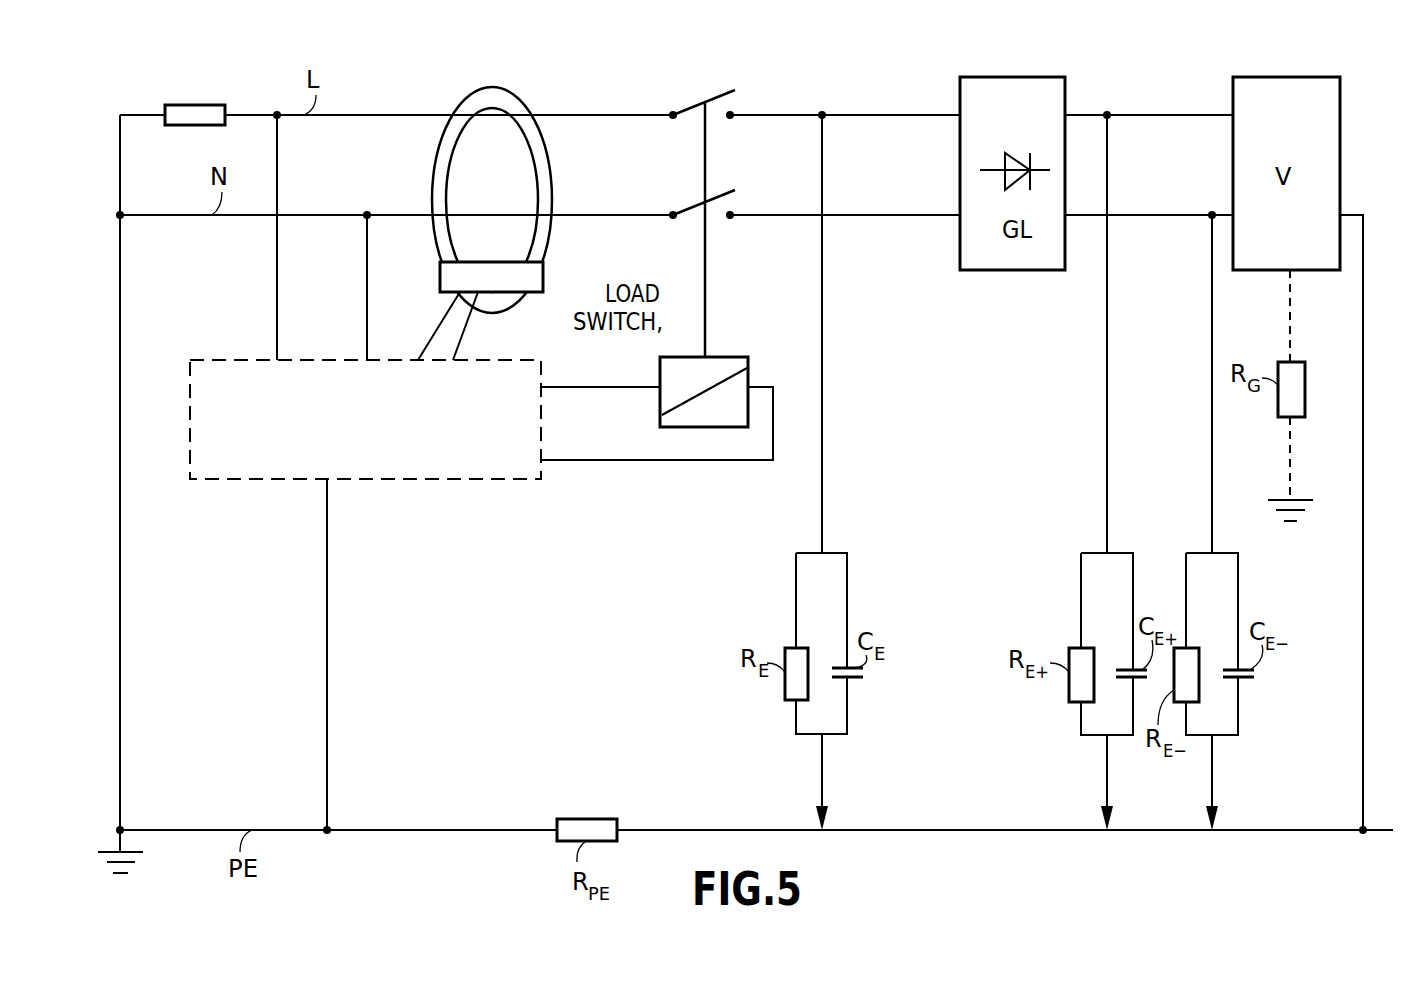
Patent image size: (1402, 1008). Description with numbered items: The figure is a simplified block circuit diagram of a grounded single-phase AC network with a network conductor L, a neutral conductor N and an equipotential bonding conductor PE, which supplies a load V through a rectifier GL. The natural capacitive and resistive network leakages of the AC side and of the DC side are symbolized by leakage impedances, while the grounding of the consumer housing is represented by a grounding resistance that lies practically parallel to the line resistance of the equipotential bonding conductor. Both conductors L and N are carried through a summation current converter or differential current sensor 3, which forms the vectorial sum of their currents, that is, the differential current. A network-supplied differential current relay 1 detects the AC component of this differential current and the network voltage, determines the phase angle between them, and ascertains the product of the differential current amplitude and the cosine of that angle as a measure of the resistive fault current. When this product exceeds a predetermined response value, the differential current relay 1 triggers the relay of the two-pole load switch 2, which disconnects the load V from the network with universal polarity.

The differential current relay 1 is at (208, 360).
The load switch 2 is at (676, 357).
The differential current sensor 3 is at (432, 186).